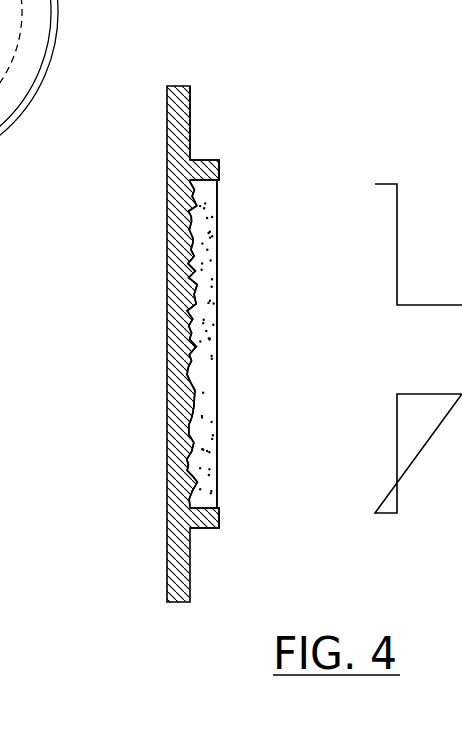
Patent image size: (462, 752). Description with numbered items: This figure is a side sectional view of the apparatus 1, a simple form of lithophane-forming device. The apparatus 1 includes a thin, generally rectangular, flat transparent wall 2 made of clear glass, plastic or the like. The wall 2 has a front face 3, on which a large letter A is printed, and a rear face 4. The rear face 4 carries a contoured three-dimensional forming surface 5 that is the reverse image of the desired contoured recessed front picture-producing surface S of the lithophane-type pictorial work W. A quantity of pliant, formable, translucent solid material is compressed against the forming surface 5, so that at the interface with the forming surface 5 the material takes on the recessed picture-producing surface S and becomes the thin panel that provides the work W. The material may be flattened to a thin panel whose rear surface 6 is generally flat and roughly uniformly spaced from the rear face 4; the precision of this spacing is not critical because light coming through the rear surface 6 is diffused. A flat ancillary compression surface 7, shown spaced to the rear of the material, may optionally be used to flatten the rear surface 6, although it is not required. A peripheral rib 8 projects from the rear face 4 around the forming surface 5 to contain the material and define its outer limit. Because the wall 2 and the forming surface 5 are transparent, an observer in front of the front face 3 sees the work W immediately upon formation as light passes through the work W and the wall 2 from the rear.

The apparatus 1 is at (362, 350).
The transparent wall 2 is at (138, 344).
The front face 3 is at (167, 187).
The rear face 4 is at (190, 110).
The forming surface 5 is at (200, 425).
The rear surface 6 is at (217, 478).
The ancillary compression surface 7 is at (375, 430).
The peripheral rib 8 is at (219, 160).
The picture-producing surface S is at (190, 325).
The pictorial work W is at (218, 230).